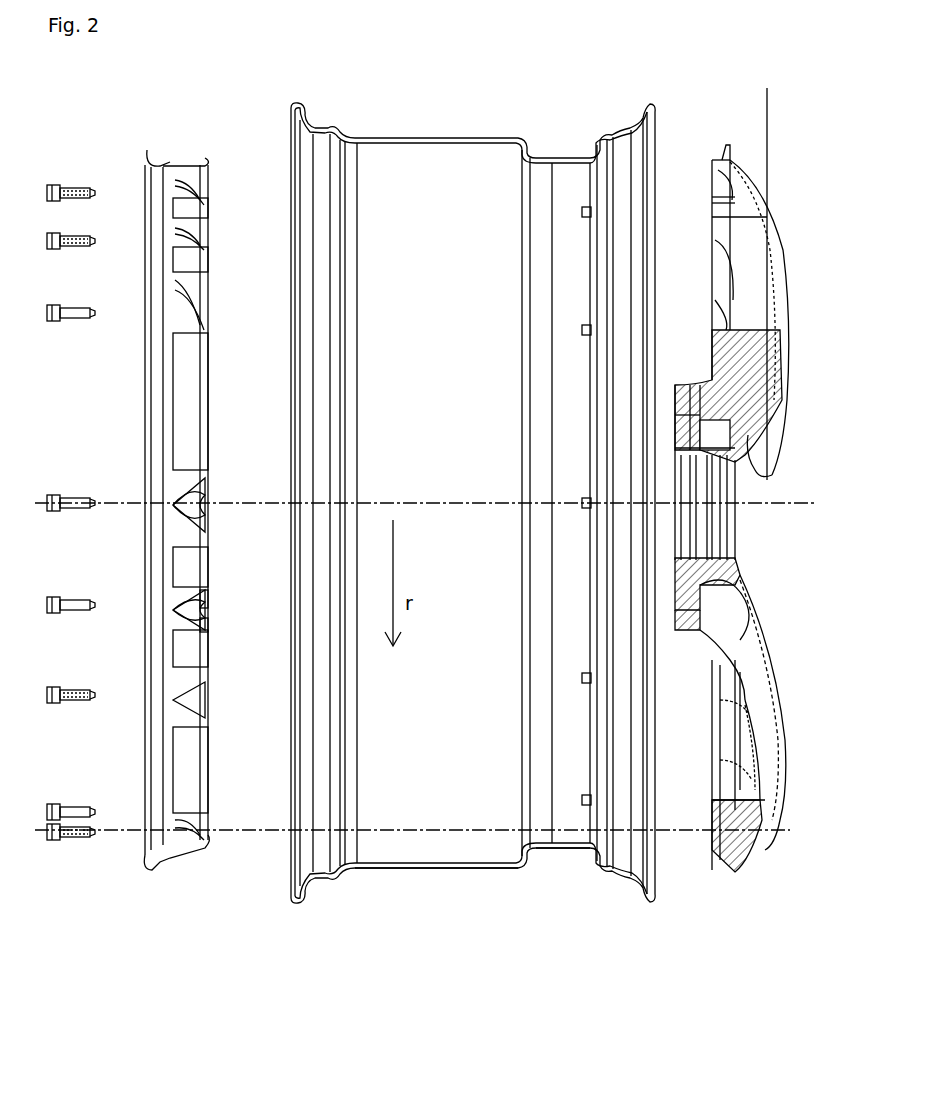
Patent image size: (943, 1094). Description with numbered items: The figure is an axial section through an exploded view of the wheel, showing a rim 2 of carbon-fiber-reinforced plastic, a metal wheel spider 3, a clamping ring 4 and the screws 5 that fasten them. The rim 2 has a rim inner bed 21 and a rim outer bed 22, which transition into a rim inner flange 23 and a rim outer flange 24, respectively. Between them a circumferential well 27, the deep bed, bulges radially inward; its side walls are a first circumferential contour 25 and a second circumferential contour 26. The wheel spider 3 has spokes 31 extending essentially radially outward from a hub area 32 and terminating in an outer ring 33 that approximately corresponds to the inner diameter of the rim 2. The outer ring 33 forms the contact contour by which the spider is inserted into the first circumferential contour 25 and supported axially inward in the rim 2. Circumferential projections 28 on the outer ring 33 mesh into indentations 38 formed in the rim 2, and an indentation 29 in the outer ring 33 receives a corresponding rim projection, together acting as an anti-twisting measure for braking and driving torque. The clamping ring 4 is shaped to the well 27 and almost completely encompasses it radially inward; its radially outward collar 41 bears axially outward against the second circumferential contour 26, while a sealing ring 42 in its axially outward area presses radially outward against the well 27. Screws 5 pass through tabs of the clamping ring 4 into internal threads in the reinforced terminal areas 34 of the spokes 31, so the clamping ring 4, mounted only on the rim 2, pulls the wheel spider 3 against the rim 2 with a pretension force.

The rim 2 is at (382, 138).
The wheel spider 3 is at (726, 112).
The clamping ring 4 is at (163, 165).
The screws 5 is at (53, 185).
The rim inner bed 21 is at (340, 135).
The rim outer bed 22 is at (638, 113).
The rim inner flange 23 is at (300, 107).
The rim outer flange 24 is at (643, 112).
The first circumferential contour 25 is at (590, 866).
The second circumferential contour 26 is at (532, 862).
The circumferential well 27 is at (557, 160).
The projections 28 is at (738, 818).
The indentation 29 is at (718, 670).
The spokes 31 is at (759, 269).
The hub area 32 is at (737, 573).
The outer ring 33 is at (712, 160).
The reinforced terminal areas 34 is at (722, 155).
The indentations 38 is at (586, 328).
The collar 41 is at (151, 157).
The sealing ring 42 is at (203, 163).